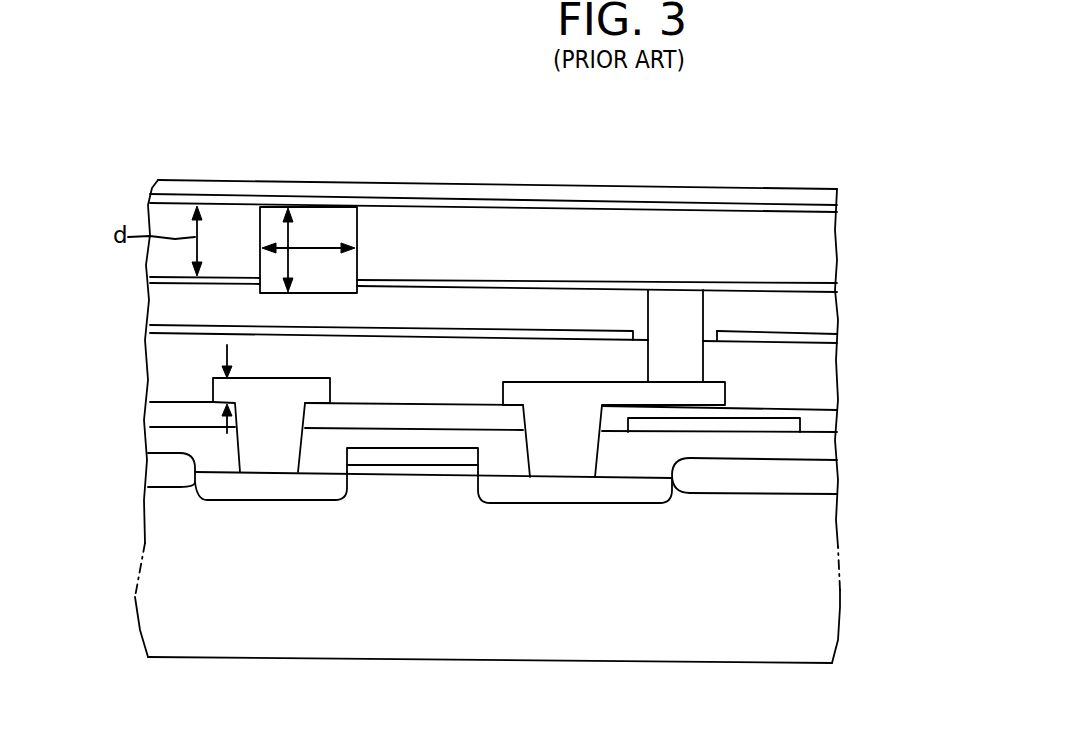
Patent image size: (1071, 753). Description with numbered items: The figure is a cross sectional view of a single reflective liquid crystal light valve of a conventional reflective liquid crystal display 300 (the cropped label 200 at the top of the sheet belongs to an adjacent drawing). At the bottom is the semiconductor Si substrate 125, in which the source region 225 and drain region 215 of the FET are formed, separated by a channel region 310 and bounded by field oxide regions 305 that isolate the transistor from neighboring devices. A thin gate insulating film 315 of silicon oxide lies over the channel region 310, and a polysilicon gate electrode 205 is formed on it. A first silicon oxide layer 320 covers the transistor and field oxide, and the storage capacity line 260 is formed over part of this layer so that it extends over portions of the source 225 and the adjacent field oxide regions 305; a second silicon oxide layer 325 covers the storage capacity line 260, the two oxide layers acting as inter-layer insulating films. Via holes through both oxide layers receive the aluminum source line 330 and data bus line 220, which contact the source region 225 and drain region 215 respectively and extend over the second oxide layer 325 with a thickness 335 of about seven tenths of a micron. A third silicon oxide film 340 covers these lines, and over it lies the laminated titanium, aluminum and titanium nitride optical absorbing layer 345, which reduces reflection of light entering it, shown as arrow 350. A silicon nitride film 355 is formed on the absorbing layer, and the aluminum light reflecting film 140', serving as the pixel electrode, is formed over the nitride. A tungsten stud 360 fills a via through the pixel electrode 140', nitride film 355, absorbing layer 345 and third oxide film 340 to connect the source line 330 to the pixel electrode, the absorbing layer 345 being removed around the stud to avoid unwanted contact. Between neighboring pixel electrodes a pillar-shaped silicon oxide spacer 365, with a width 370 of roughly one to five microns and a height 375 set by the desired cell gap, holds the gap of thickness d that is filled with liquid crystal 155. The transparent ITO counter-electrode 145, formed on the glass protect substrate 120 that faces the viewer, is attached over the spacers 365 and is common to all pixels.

The glass protect substrate 120 is at (783, 197).
The counter-electrode 145 is at (835, 207).
The liquid crystal 155 is at (818, 247).
The light reflecting film 140' is at (533, 288).
The silicon nitride film 355 is at (820, 315).
The optical absorbing layer 345 is at (823, 338).
The third silicon oxide film 340 is at (818, 378).
The storage capacity line 260 is at (753, 427).
The second silicon oxide layer 325 is at (823, 425).
The first silicon oxide layer 320 is at (820, 448).
The field oxide regions 305 is at (817, 497).
The drain region 215 is at (235, 492).
The source region 225 is at (580, 492).
The polysilicon gate electrode 205 is at (383, 455).
The channel region 310 is at (408, 483).
The gate insulating film 315 is at (430, 470).
The data bus line 220 is at (303, 392).
The source line 330 is at (540, 393).
The tungsten stud 360 is at (687, 305).
The pillar-shaped spacer 365 is at (310, 220).
The spacer width 370 is at (320, 248).
The spacer height 375 is at (285, 232).
The thickness of source and data lines 335 is at (213, 388).
The light arrow 350 is at (500, 142).
The reflection liquid crystal display 300 is at (863, 616).
The semiconductor Si substrate 125 is at (817, 537).
The device 200 is at (265, 4).